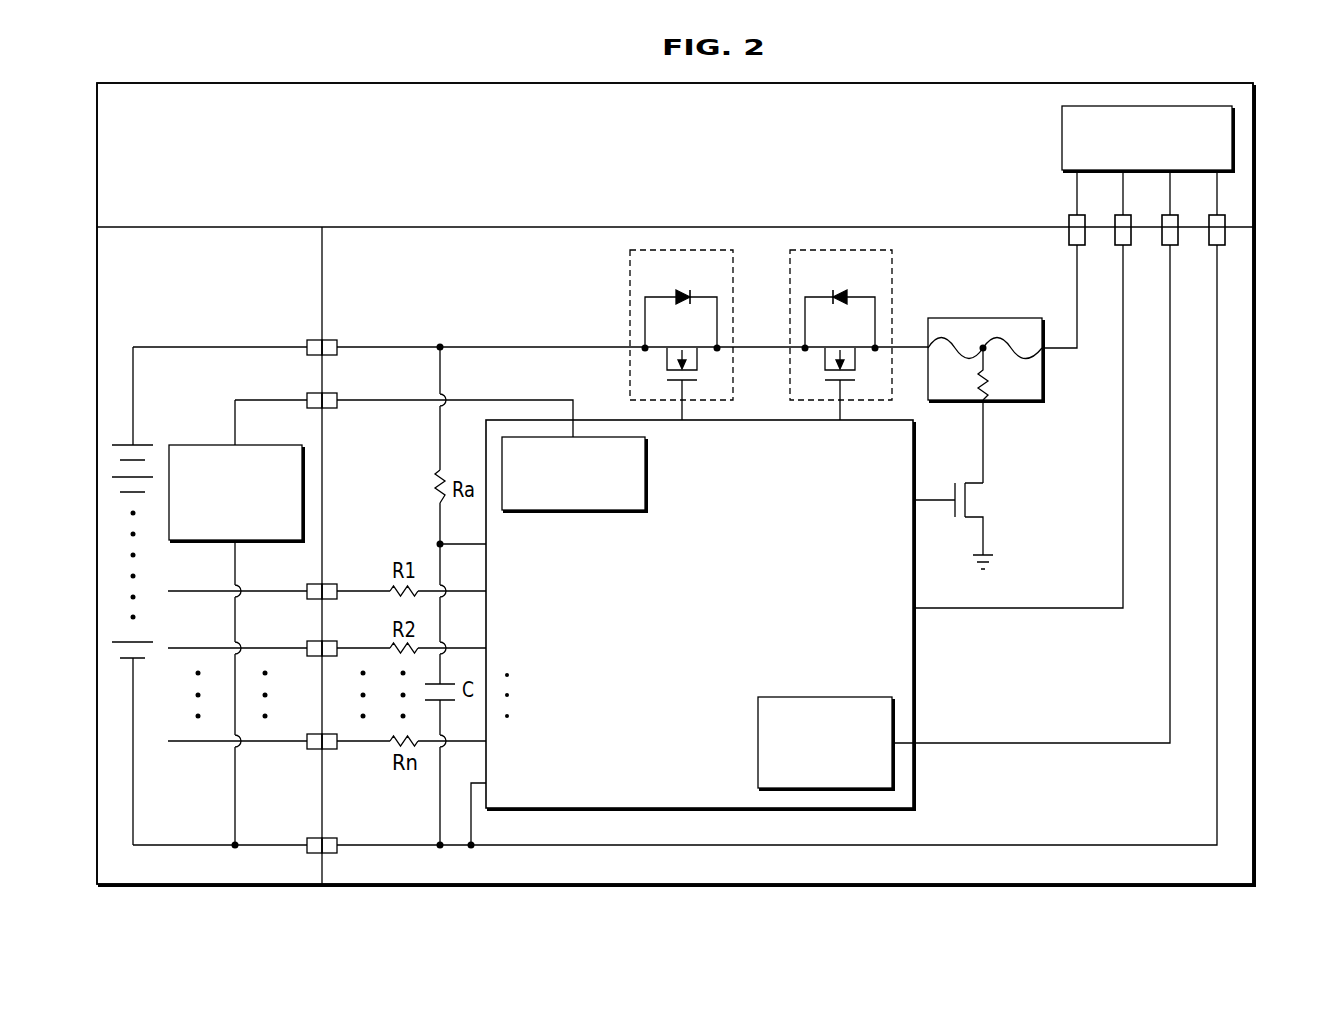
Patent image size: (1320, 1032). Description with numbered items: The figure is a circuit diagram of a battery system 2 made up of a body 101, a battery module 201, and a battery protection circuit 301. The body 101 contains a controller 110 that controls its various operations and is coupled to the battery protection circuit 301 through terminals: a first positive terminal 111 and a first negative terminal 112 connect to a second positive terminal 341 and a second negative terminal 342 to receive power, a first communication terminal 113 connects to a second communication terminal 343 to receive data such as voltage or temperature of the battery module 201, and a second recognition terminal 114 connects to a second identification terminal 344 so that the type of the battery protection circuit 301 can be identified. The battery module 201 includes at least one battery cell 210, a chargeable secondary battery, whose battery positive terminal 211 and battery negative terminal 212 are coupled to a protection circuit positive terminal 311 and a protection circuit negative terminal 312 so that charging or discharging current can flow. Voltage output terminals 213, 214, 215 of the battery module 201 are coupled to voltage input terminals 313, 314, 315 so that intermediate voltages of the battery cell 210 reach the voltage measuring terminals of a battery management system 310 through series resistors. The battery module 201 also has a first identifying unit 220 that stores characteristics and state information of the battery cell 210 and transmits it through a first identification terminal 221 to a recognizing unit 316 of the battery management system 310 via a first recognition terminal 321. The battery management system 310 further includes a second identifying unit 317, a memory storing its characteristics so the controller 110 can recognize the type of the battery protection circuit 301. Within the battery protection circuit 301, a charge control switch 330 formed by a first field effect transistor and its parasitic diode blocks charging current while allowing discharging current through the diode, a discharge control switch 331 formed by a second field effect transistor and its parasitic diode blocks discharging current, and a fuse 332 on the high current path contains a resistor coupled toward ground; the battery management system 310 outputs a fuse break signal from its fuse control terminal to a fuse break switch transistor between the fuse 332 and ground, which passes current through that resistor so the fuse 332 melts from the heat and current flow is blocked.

The battery system 2 is at (1264, 141).
The body 101 is at (1256, 190).
The controller 110 is at (1062, 137).
The first positive terminal 111 is at (1068, 218).
The first negative terminal 112 is at (1207, 218).
The first communication terminal 113 is at (1114, 218).
The second recognition terminal 114 is at (1161, 218).
The battery module 201 is at (226, 227).
The battery cell 210 is at (147, 438).
The battery positive terminal 211 is at (303, 340).
The battery negative terminal 212 is at (303, 838).
The voltage output terminal 213 is at (303, 584).
The voltage output terminal 214 is at (303, 641).
The voltage output terminal 215 is at (303, 749).
The first identifying unit 220 is at (253, 445).
The first identification terminal 221 is at (303, 393).
The battery protection circuit 301 is at (1256, 612).
The battery management system 310 is at (763, 420).
The protection circuit positive terminal 311 is at (343, 340).
The protection circuit negative terminal 312 is at (343, 838).
The voltage input terminal 313 is at (343, 584).
The voltage input terminal 314 is at (343, 641).
The voltage input terminal 315 is at (343, 749).
The recognizing unit 316 is at (585, 512).
The second identifying unit 317 is at (828, 697).
The first recognition terminal 321 is at (343, 393).
The charge control switch 330 is at (628, 276).
The discharge control switch 331 is at (893, 278).
The fuse 332 is at (988, 318).
The second positive terminal 341 is at (1068, 242).
The second negative terminal 342 is at (1207, 242).
The second communication terminal 343 is at (1114, 242).
The second identification terminal 344 is at (1161, 242).